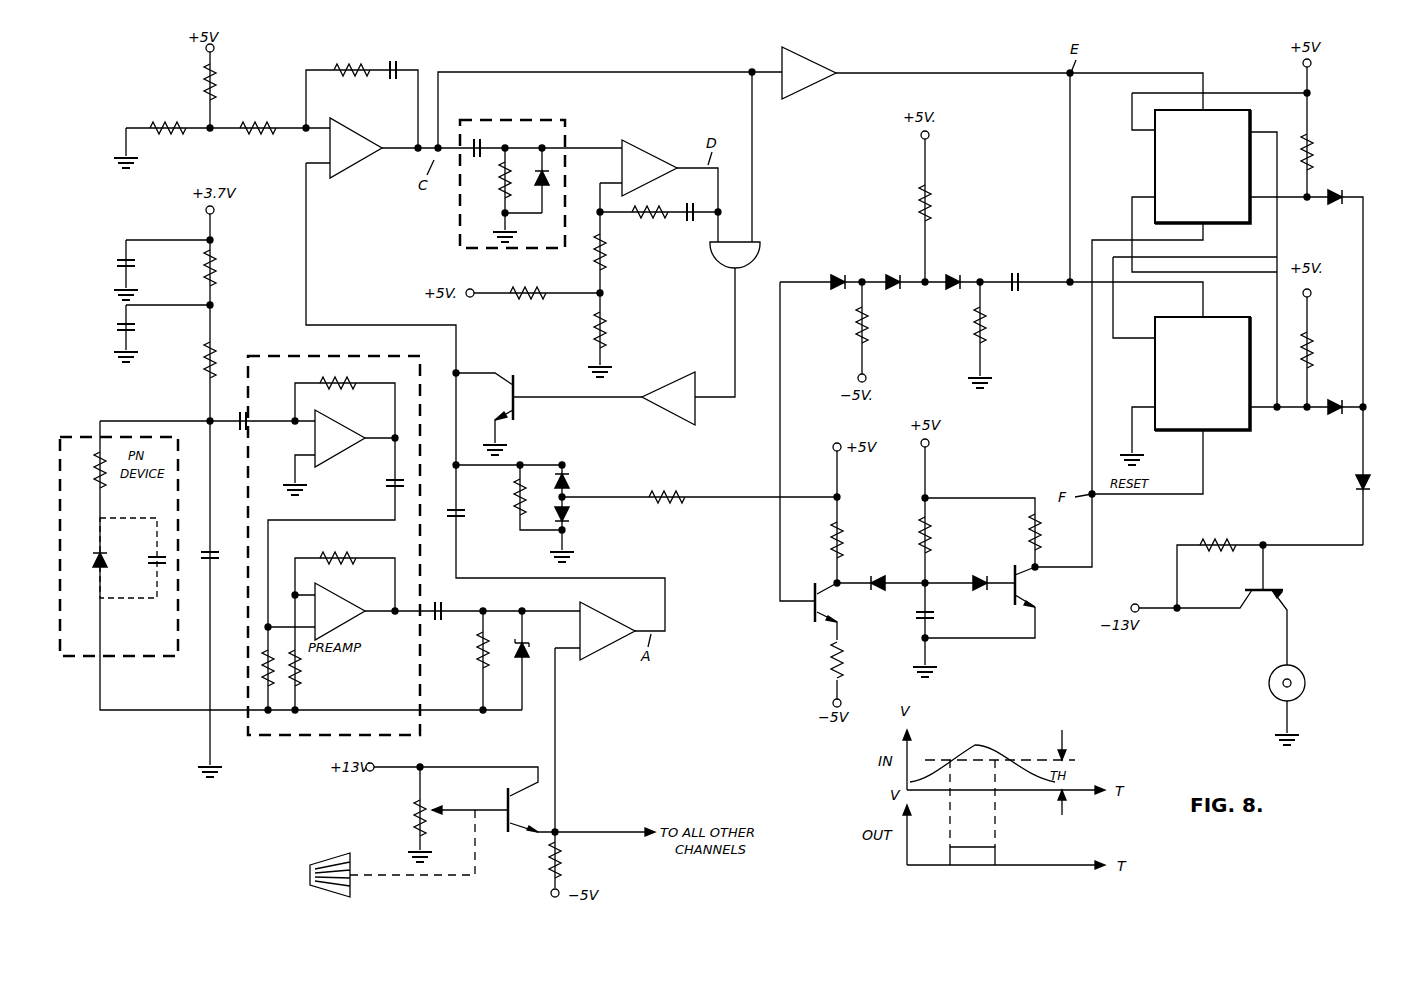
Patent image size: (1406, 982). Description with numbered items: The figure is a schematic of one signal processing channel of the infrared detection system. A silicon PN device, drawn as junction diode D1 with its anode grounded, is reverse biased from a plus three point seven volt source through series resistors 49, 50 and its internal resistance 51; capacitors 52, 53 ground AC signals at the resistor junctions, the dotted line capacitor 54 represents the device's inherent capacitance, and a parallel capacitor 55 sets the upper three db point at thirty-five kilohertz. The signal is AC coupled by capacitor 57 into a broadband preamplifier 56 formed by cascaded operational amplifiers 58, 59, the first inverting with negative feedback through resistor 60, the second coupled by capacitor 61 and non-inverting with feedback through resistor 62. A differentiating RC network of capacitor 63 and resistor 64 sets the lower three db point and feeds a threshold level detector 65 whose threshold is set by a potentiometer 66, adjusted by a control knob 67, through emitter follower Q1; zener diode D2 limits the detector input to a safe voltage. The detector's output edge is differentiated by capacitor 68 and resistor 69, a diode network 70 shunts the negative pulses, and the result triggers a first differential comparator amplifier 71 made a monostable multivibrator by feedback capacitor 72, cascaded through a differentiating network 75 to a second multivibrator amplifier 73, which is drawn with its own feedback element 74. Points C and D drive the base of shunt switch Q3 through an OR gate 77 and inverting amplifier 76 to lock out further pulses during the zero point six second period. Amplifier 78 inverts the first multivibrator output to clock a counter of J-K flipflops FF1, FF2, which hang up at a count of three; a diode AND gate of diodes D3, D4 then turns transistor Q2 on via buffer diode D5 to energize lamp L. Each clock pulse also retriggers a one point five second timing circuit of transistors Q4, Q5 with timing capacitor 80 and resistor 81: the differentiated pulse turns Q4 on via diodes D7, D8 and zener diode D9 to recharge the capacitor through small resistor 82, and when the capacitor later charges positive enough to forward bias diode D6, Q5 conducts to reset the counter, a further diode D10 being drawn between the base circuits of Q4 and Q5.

The resistor 49 is at (218, 262).
The resistor 50 is at (205, 348).
The internal resistance 51 is at (98, 462).
The capacitor 52 is at (118, 328).
The capacitor 53 is at (118, 262).
The dotted line capacitor 54 is at (146, 572).
The capacitor 55 is at (220, 553).
The preamplifier 56 is at (280, 464).
The capacitor 57 is at (243, 413).
The operational amplifier 58 is at (335, 436).
The operational amplifier 59 is at (330, 610).
The resistor 60 is at (340, 375).
The capacitor 61 is at (385, 487).
The resistor 62 is at (338, 562).
The capacitor 63 is at (438, 600).
The resistor 64 is at (478, 645).
The threshold level detector 65 is at (612, 626).
The potentiometer 66 is at (430, 800).
The control knob 67 is at (330, 860).
The non-retriggerable timing circuit 68 is at (452, 520).
The retriggerable timing circuit 69 is at (515, 505).
The diode network 70 is at (578, 490).
The amplifier 71 is at (372, 158).
The feedback capacitor 72 is at (400, 68).
The amplifier 73 is at (648, 160).
The feedback capacitor 74 is at (692, 205).
The differentiating network 75 is at (502, 130).
The inverting amplifier 76 is at (671, 398).
The OR gate 77 is at (706, 255).
The amplifier 78 is at (820, 75).
The capacitor 80 is at (933, 535).
The resistor 81 is at (1000, 352).
The resistor 82 is at (845, 652).
The emitter follower Q1 is at (524, 810).
The transistor Q2 is at (1266, 605).
The shunt switch Q3 is at (484, 414).
The transistor Q4 is at (837, 611).
The transistor Q5 is at (1028, 586).
The junction diode D1 is at (87, 561).
The zener diode D2 is at (529, 660).
The diode D3 is at (1337, 188).
The diode D4 is at (1335, 398).
The buffer diode D5 is at (1350, 478).
The diode D6 is at (982, 573).
The diode D7 is at (955, 272).
The diode D8 is at (838, 272).
The zener diode D9 is at (895, 292).
The diode D10 is at (880, 573).
The J-K flipflop FF1 is at (1202, 166).
The J-K flipflop FF2 is at (1202, 373).
The lamp L is at (1293, 705).